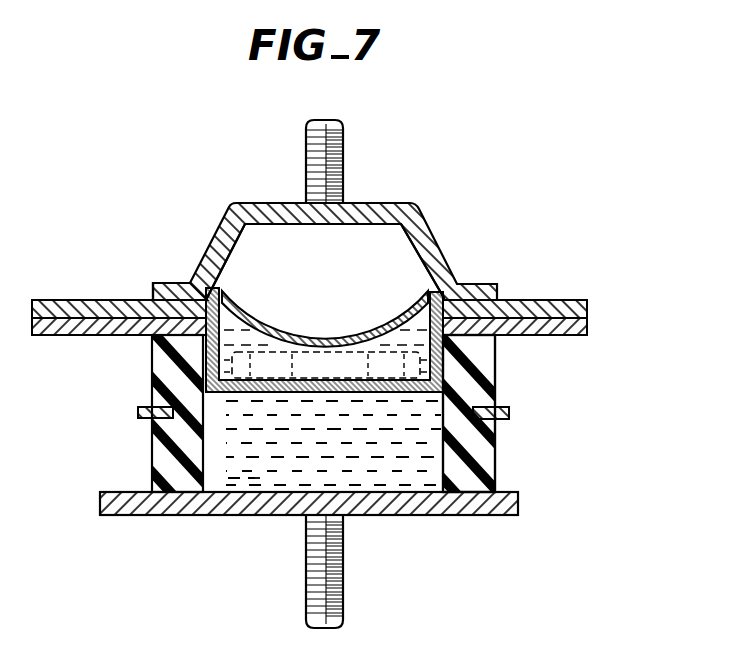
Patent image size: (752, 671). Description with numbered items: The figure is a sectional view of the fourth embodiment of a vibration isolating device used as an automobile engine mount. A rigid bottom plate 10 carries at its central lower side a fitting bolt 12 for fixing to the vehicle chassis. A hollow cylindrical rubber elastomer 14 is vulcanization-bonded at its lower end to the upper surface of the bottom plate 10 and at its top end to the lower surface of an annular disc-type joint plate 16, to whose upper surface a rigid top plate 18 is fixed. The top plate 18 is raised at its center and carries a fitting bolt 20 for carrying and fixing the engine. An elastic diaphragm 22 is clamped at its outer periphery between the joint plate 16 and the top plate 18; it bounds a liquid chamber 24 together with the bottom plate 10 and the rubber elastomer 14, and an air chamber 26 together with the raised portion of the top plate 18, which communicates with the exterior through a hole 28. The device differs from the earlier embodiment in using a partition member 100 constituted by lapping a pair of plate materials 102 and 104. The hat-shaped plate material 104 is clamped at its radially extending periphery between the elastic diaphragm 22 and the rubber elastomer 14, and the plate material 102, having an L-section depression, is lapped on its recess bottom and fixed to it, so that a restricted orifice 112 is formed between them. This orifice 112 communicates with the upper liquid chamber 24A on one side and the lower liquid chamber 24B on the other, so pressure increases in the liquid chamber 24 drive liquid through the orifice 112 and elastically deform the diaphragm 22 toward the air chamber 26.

The bottom plate 10 is at (160, 516).
The fitting bolt 12 is at (343, 596).
The rubber elastomer 14 is at (152, 455).
The joint plate 16 is at (589, 319).
The top plate 18 is at (398, 203).
The fitting bolt 20 is at (343, 158).
The elastic diaphragm 22 is at (220, 243).
The liquid chamber 24 is at (295, 450).
The upper liquid chamber 24A is at (455, 285).
The lower liquid chamber 24B is at (239, 468).
The air chamber 26 is at (284, 258).
The hole 28 is at (440, 251).
The partition member 100 is at (583, 417).
The plate material 102 is at (206, 357).
The plate material 104 is at (206, 388).
The orifice 112 is at (443, 363).